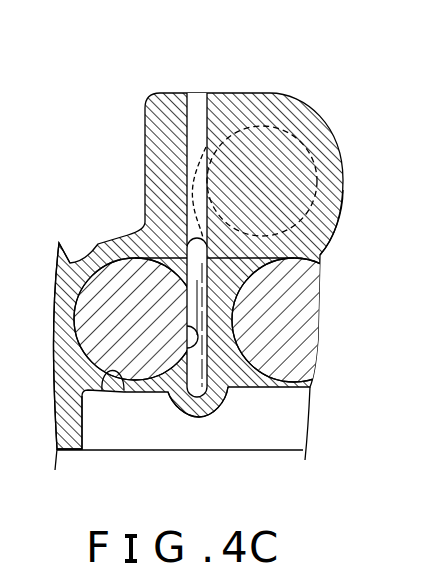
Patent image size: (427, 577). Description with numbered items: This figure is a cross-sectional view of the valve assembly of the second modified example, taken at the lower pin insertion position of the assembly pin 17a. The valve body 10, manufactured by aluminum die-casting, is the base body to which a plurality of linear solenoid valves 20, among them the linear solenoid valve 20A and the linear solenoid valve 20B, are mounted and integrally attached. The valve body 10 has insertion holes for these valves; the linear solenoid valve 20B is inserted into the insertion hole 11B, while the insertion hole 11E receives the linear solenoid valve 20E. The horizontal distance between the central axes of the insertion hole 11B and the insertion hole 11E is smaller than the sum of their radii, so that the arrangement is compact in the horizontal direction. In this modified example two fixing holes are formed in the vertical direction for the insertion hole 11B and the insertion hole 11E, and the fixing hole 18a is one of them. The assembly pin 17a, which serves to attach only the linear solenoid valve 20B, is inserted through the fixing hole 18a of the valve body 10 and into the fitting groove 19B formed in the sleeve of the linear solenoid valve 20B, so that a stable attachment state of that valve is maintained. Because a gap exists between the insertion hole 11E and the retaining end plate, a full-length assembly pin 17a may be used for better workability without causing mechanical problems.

The valve body 10 is at (201, 417).
The insertion hole 11B is at (123, 390).
The insertion hole 11E is at (322, 228).
The assembly pin 17a is at (205, 282).
The fixing hole 18a is at (188, 100).
The fitting groove 19B is at (183, 383).
The linear solenoid valve 20 is at (426, 404).
The linear solenoid valve 20A is at (297, 303).
The linear solenoid valve 20B is at (111, 291).
The linear solenoid valve 20E is at (281, 157).